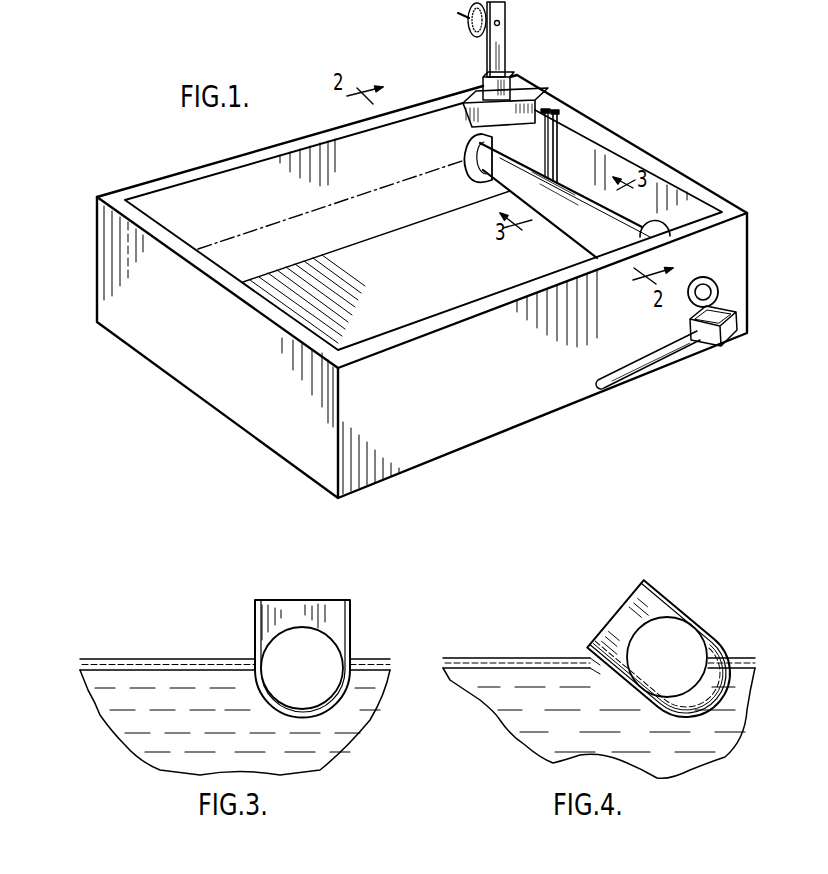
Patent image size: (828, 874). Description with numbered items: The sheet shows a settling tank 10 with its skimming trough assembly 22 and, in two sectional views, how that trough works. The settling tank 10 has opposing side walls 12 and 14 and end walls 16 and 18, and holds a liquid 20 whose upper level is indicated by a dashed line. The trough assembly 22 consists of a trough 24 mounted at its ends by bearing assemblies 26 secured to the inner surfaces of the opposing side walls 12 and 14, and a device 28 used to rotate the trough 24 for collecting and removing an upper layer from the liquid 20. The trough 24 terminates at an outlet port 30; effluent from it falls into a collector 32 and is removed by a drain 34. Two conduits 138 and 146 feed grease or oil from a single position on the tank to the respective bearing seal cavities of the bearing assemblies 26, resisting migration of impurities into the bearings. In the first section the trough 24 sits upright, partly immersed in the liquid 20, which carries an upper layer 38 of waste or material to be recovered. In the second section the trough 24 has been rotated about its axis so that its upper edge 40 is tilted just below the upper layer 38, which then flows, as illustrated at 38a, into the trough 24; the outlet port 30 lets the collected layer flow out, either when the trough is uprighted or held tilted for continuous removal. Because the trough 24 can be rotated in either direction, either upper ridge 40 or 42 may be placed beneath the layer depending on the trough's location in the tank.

In FIG. 1, the settling tank 10 is at (422, 300).
In FIG. 1, the side wall 12 is at (452, 341).
In FIG. 1, the side wall 14 is at (182, 197).
In FIG. 1, the end wall 16 is at (193, 355).
In FIG. 1, the end wall 18 is at (659, 183).
In FIG. 1, the liquid 20 is at (292, 219).
In FIG. 3, the liquid 20 is at (76, 670).
In FIG. 1, the trough assembly 22 is at (601, 163).
In FIG. 1, the trough 24 is at (680, 238).
In FIG. 3, the trough 24 is at (352, 642).
In FIG. 4, the trough 24 is at (642, 640).
In FIG. 1, the bearing assembly 26 is at (456, 148).
In FIG. 1, the rotating device 28 is at (540, 46).
In FIG. 1, the outlet port 30 is at (717, 282).
In FIG. 4, the outlet port 30 is at (660, 618).
In FIG. 1, the collector 32 is at (711, 340).
In FIG. 1, the drain 34 is at (638, 363).
In FIG. 3, the upper layer 38 is at (207, 658).
In FIG. 4, the upper layer 38 is at (518, 637).
In FIG. 4, the flowing upper layer 38a is at (665, 656).
In FIG. 4, the upper edge 40 is at (578, 667).
In FIG. 4, the upper ridge 42 is at (631, 591).
In FIG. 1, the conduit 138 is at (548, 108).
In FIG. 1, the conduit 146 is at (558, 133).